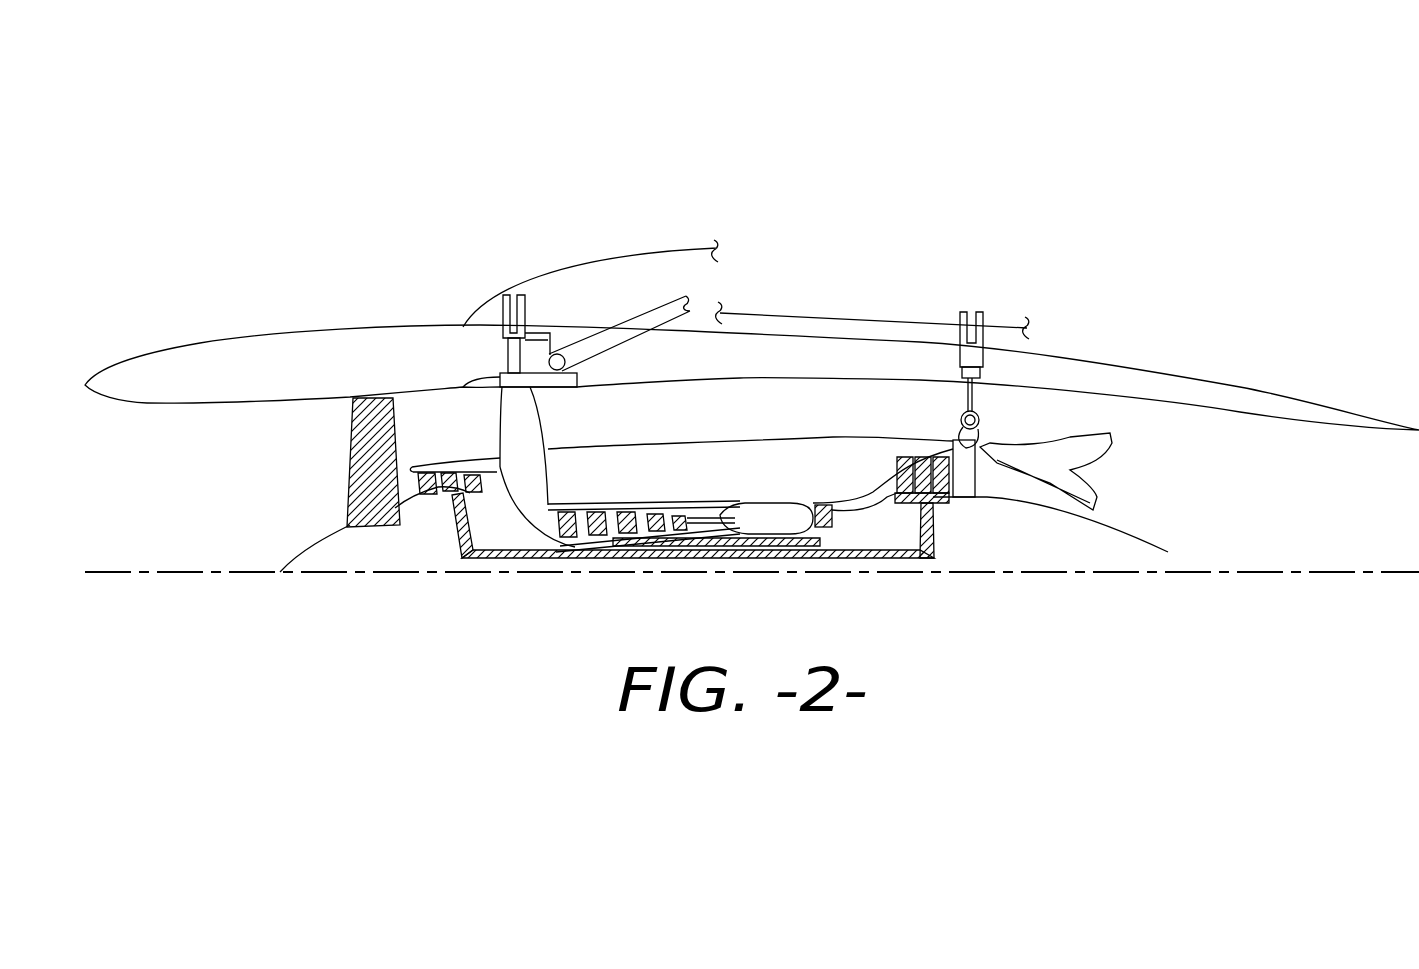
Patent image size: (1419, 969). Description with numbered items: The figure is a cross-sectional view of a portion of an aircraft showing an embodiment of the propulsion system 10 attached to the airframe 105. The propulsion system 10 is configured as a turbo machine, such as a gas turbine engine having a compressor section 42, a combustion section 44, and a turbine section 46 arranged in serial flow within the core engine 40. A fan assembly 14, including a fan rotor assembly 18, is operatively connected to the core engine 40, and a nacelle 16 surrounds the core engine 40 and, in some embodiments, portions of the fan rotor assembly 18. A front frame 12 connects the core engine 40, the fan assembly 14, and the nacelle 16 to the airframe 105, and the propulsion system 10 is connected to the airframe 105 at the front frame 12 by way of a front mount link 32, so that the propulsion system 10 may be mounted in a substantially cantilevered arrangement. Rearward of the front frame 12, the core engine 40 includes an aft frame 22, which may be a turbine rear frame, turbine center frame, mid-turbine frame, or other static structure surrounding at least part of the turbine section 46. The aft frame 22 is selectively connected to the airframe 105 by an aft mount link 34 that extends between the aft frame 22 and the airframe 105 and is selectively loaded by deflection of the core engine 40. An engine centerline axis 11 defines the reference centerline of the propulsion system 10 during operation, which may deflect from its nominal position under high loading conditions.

The propulsion system 10 is at (945, 183).
The engine centerline axis 11 is at (210, 573).
The front frame 12 is at (543, 432).
The fan assembly 14 is at (332, 431).
The nacelle 16 is at (348, 323).
The fan rotor assembly 18 is at (345, 468).
The aft frame 22 is at (963, 440).
The front mount link 32 is at (600, 342).
The aft mount link 34 is at (992, 399).
The core engine 40 is at (682, 478).
The compressor section 42 is at (565, 492).
The combustion section 44 is at (768, 488).
The turbine section 46 is at (876, 463).
The airframe 105 is at (645, 247).